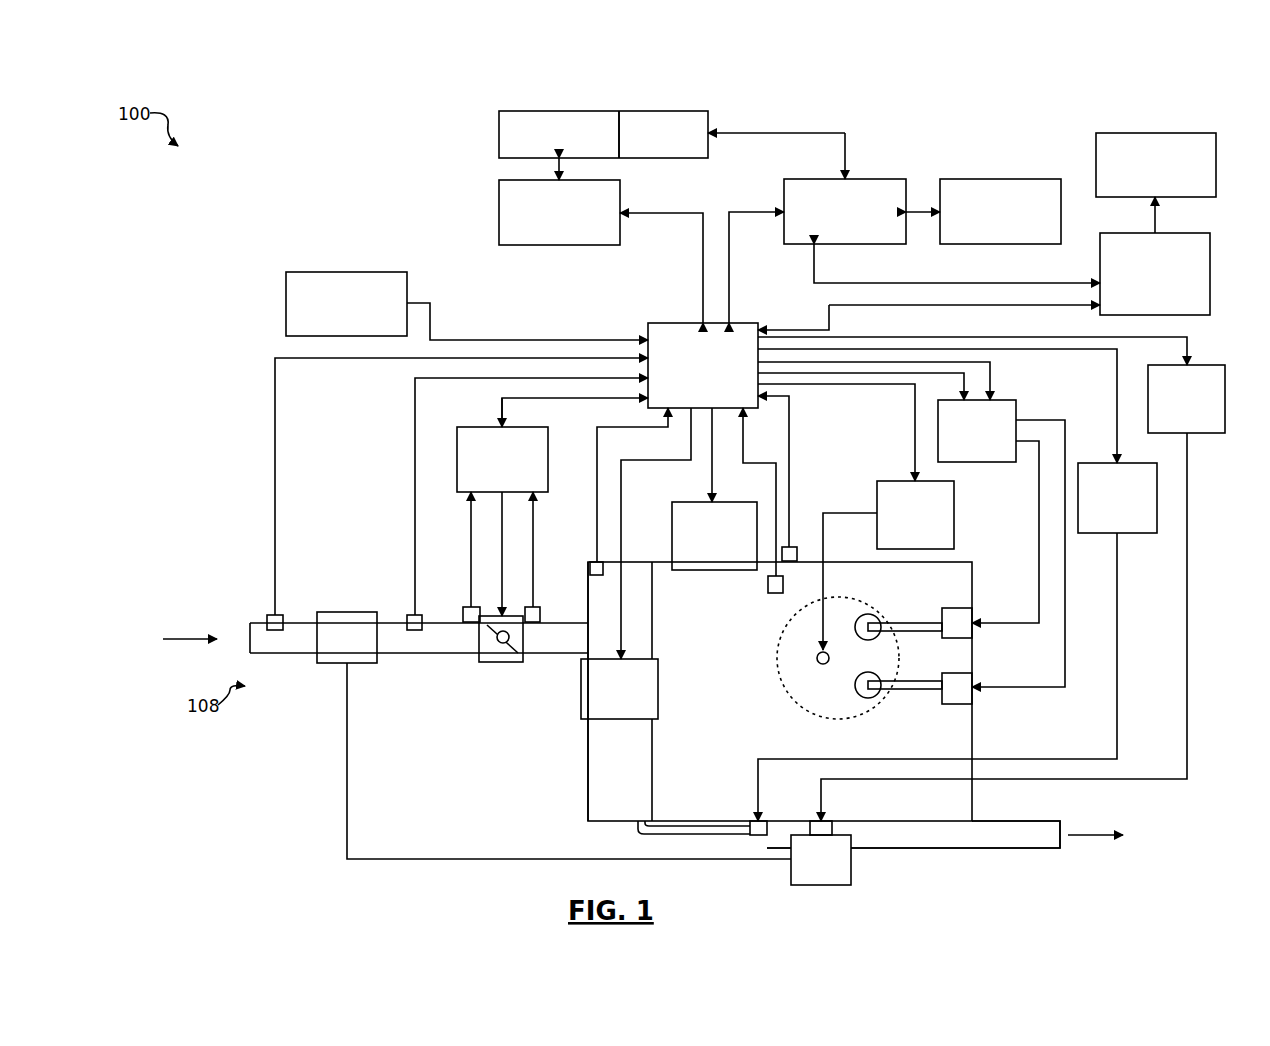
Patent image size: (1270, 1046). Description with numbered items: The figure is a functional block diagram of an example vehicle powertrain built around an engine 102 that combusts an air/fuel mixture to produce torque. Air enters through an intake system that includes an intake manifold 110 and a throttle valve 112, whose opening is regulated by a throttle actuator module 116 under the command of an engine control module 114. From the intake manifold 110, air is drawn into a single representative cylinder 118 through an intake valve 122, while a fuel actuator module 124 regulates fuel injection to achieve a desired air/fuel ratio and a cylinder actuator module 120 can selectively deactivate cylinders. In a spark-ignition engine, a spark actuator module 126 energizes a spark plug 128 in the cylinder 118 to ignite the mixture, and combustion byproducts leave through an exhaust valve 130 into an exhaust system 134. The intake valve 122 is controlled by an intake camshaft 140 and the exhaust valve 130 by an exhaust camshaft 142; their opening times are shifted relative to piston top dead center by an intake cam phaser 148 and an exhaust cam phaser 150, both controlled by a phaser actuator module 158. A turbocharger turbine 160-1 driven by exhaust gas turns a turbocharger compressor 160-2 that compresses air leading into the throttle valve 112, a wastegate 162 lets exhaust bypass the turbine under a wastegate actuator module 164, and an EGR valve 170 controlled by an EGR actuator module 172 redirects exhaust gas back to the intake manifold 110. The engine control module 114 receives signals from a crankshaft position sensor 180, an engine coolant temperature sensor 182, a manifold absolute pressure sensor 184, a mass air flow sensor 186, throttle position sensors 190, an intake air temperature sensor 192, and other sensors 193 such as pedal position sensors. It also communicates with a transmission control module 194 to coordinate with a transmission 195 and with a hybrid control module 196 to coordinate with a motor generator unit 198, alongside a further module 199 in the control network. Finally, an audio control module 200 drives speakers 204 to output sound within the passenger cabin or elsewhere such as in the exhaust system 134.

The engine 102 is at (972, 572).
The intake manifold 110 is at (588, 760).
The throttle valve 112 is at (501, 662).
The engine control module 114 is at (744, 324).
The throttle actuator module 116 is at (470, 427).
The cylinder 118 is at (800, 713).
The cylinder actuator module 120 is at (724, 502).
The intake valve 122 is at (870, 614).
The fuel actuator module 124 is at (640, 720).
The spark actuator module 126 is at (954, 516).
The spark plug 128 is at (817, 658).
The exhaust valve 130 is at (868, 700).
The exhaust system 134 is at (1034, 850).
The intake camshaft 140 is at (920, 623).
The exhaust camshaft 142 is at (920, 690).
The intake cam phaser 148 is at (957, 608).
The exhaust cam phaser 150 is at (960, 704).
The phaser actuator module 158 is at (1015, 412).
The turbocharger turbine 160-1 is at (851, 867).
The turbocharger compressor 160-2 is at (332, 663).
The wastegate 162 is at (832, 821).
The wastegate actuator module 164 is at (1204, 433).
The exhaust gas recirculation valve 170 is at (756, 835).
The EGR actuator module 172 is at (1134, 533).
The crankshaft position sensor 180 is at (791, 547).
The engine coolant temperature sensor 182 is at (776, 593).
The manifold absolute pressure sensor 184 is at (590, 562).
The mass air flow sensor 186 is at (407, 615).
The throttle position sensors 190 is at (471, 622).
The intake air temperature sensor 192 is at (267, 615).
The other sensors 193 is at (286, 283).
The transmission control module 194 is at (499, 208).
The transmission 195 is at (499, 137).
The hybrid control module 196 is at (844, 244).
The motor generator unit 198 is at (660, 158).
The network interface 199 is at (999, 244).
The audio control module 200 is at (1210, 280).
The speakers 204 is at (1216, 162).